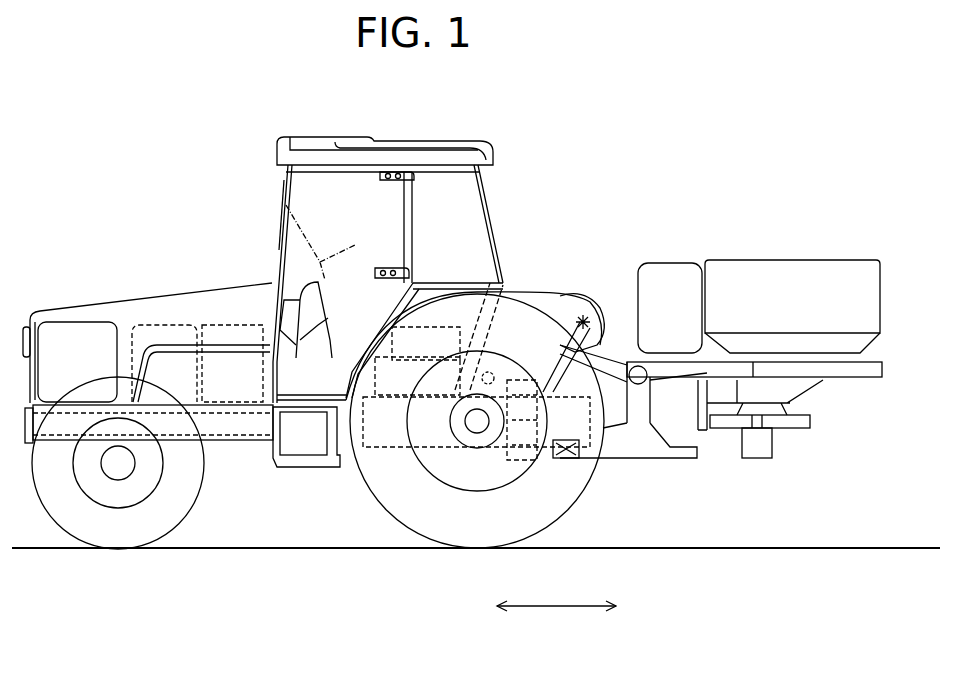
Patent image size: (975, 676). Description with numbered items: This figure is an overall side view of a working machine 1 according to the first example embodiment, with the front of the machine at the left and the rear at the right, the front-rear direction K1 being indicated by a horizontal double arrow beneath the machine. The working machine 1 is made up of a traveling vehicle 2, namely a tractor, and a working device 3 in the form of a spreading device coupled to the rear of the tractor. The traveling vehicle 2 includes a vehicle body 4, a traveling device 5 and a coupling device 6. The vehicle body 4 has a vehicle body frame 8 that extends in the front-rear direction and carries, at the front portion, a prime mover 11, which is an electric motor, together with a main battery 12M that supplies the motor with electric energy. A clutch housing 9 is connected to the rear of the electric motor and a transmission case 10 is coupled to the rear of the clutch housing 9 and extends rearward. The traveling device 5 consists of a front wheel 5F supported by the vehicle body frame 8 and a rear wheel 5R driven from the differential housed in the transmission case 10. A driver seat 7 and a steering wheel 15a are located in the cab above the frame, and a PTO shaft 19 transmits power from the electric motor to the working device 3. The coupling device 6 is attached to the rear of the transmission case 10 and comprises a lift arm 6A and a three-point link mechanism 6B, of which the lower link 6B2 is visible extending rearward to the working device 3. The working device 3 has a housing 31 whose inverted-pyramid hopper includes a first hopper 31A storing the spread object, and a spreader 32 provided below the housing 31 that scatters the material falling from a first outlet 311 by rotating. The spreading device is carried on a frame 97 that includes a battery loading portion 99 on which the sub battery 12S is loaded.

The working machine 1 is at (629, 124).
The traveling vehicle 2 is at (215, 243).
The working device 3 is at (876, 158).
The vehicle body 4 is at (125, 296).
The traveling device 5 is at (585, 504).
The front wheel 5F is at (172, 527).
The rear wheel 5R is at (398, 522).
The coupling device 6 is at (593, 304).
The lift arm 6A is at (500, 332).
The three-point link mechanism 6B is at (541, 332).
The lower link 6B2 is at (585, 470).
The driver seat 7 is at (447, 330).
The vehicle body frame 8 is at (222, 442).
The clutch housing 9 is at (301, 456).
The transmission case 10 is at (373, 453).
The prime mover 11 is at (218, 325).
The main battery 12M is at (172, 325).
The sub battery 12S is at (661, 263).
The steering wheel 15a is at (279, 205).
The PTO shaft 19 is at (490, 462).
The housing 31 is at (907, 122).
The first hopper 31A is at (775, 259).
The spreader 32 is at (784, 437).
The frame 97 is at (872, 380).
The battery loading portion 99 is at (670, 350).
The first outlet 311 is at (738, 404).
The front-rear direction K1 is at (555, 607).